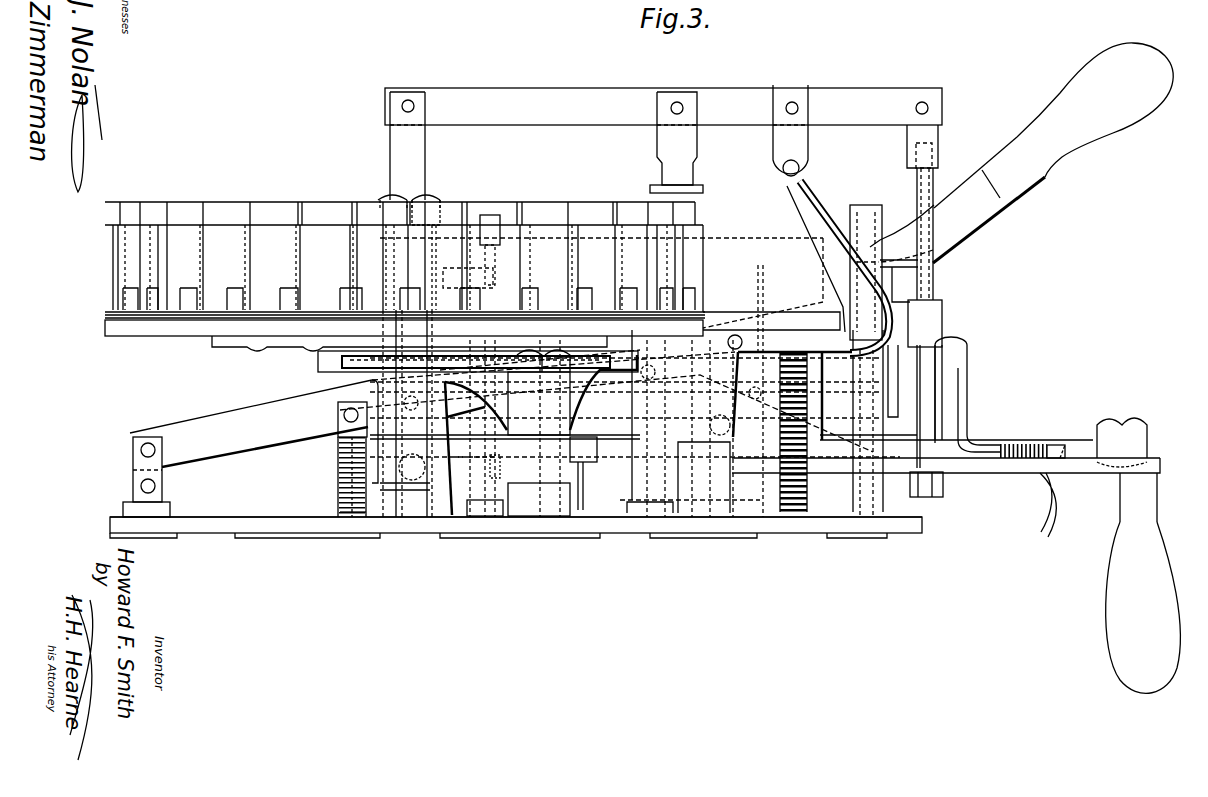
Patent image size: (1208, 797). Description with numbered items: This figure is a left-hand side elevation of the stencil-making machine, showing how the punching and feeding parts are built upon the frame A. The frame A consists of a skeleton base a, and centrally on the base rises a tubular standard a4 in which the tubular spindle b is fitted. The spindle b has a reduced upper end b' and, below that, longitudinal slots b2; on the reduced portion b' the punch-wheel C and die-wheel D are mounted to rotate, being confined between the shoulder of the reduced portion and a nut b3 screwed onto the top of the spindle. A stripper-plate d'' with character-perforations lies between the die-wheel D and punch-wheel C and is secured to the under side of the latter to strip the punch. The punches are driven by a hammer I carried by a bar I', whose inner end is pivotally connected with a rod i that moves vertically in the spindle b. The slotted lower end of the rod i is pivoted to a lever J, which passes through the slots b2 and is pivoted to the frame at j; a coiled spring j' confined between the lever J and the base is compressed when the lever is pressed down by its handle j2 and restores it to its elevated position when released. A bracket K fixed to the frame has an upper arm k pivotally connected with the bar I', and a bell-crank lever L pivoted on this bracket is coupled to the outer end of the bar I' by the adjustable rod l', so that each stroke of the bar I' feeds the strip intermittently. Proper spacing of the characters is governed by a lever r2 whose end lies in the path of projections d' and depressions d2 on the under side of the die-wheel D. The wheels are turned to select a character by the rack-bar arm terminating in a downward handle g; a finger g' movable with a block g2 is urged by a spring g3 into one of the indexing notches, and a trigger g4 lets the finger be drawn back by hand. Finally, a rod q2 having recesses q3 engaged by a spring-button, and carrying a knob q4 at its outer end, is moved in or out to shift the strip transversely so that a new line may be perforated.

The bar I' is at (663, 116).
The hammer I is at (680, 142).
The rod i is at (414, 149).
The reduced upper end of spindle b' is at (397, 197).
The nut b3 is at (436, 197).
The upper arm of bracket k is at (804, 186).
The lever J is at (905, 221).
The handle j2 is at (1090, 158).
The rod l' is at (920, 257).
The bracket K is at (823, 267).
The punch-wheel C is at (458, 278).
The stripper-plate d'' is at (396, 305).
The die-wheel D is at (112, 332).
The projections d' is at (409, 355).
The depressions d2 is at (548, 352).
The pivot of lever J j is at (132, 477).
The longitudinal slots b2 is at (372, 447).
The tubular spindle b is at (339, 477).
The tubular standard a4 is at (372, 503).
The coiled spring j' is at (344, 538).
The rod q2 is at (470, 442).
The recesses q3 is at (470, 460).
The lever r2 is at (700, 402).
The base a is at (605, 520).
The frame A is at (778, 536).
The bell-crank lever L is at (928, 390).
The block g2 is at (990, 440).
The spring g3 is at (1030, 442).
The finger g' is at (1063, 429).
The knob q4 is at (1140, 428).
The trigger g4 is at (1052, 507).
The handle g is at (1130, 583).